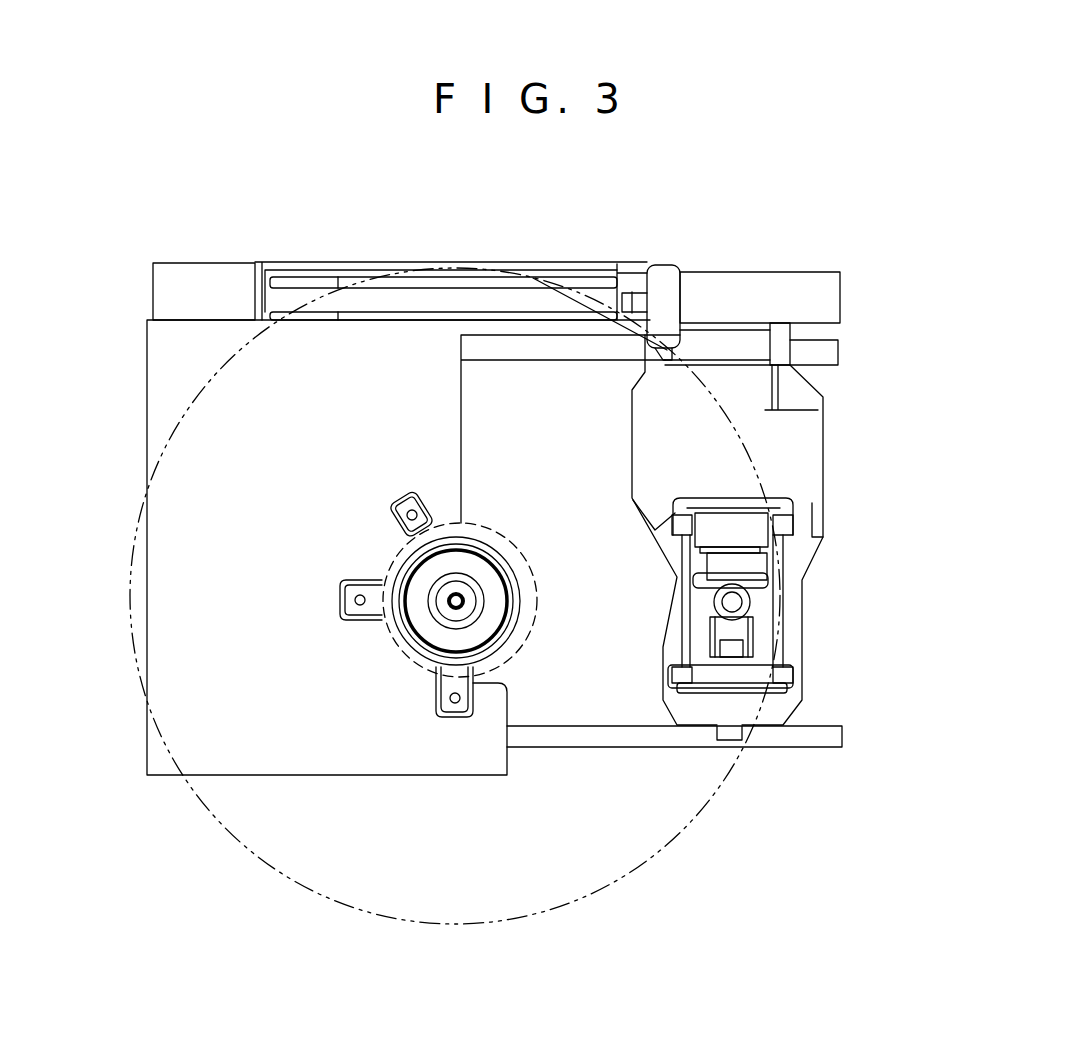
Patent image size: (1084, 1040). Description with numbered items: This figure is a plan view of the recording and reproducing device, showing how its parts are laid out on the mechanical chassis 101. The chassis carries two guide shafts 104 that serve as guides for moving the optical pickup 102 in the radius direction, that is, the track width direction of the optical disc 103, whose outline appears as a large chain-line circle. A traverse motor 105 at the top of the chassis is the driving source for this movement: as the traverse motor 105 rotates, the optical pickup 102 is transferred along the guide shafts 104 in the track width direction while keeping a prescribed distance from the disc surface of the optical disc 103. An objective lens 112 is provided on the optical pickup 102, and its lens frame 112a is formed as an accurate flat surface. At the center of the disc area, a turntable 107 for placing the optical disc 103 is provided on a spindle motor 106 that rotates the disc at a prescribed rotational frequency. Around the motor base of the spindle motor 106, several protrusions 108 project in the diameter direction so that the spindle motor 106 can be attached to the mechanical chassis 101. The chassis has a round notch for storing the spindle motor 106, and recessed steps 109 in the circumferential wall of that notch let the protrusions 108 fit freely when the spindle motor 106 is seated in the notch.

The mechanical chassis 101 is at (248, 597).
The optical pickup 102 is at (775, 463).
The optical disc 103 is at (635, 870).
The guide shafts 104 is at (827, 350).
The traverse motor 105 is at (207, 283).
The spindle motor 106 is at (492, 617).
The turntable 107 is at (493, 541).
The protrusions 108 is at (403, 523).
The recessed steps 109 is at (400, 503).
The objective lens 112 is at (733, 602).
The lens frame 112a is at (767, 586).